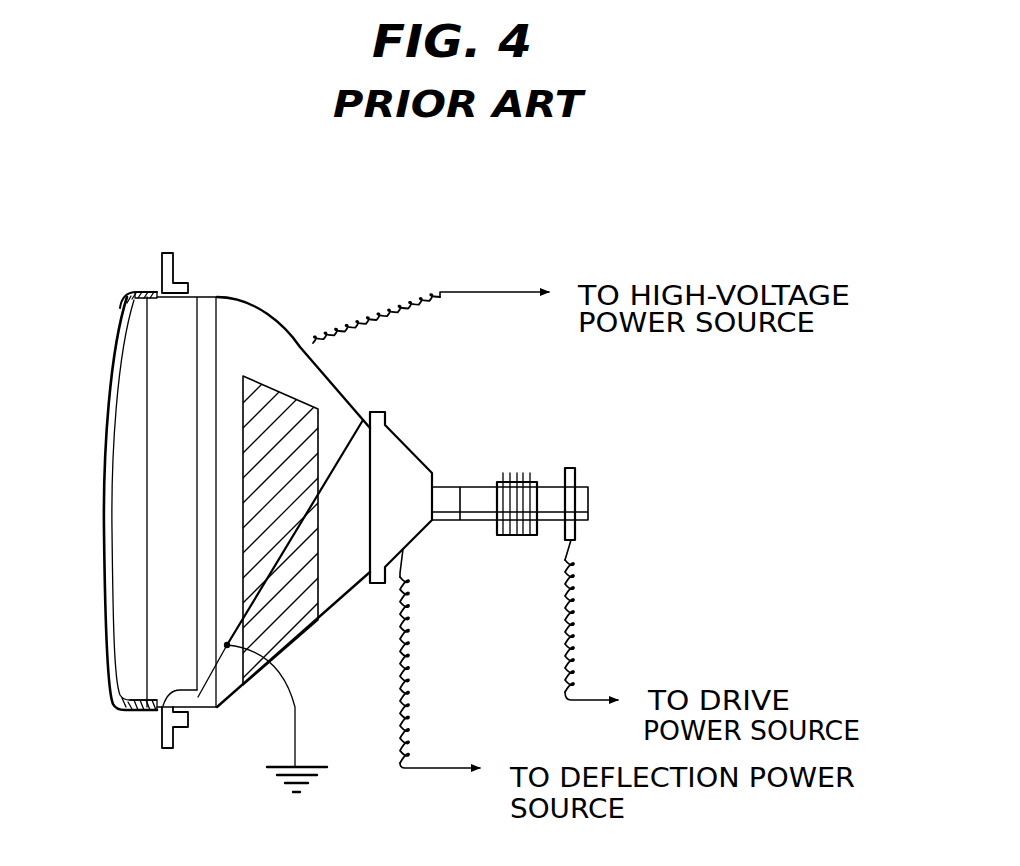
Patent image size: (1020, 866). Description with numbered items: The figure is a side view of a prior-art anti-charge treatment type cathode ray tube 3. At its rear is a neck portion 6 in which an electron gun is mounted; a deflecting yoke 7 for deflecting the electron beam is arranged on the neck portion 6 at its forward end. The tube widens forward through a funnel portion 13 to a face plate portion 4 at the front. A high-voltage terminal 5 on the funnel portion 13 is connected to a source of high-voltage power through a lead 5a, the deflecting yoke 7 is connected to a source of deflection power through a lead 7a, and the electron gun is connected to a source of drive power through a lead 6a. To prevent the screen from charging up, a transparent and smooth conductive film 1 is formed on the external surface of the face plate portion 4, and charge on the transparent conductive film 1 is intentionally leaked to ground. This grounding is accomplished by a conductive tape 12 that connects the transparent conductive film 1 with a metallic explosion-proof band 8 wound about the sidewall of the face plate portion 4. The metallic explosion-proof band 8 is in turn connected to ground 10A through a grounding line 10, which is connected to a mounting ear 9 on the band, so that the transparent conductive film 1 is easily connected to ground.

The transparent conductive film 1 is at (106, 492).
The anti-charge treatment type cathode ray tube 3 is at (207, 725).
The face plate portion 4 is at (117, 560).
The high-voltage terminal 5 is at (313, 348).
The lead 5a is at (423, 307).
The neck portion 6 is at (482, 470).
The lead 6a is at (577, 600).
The deflecting yoke 7 is at (404, 456).
The lead 7a is at (407, 637).
The metallic explosion-proof band 8 is at (187, 312).
The mounting ear 9 is at (162, 742).
The grounding line 10 is at (325, 483).
The ground 10A is at (318, 760).
The conductive tape 12 is at (127, 295).
The funnel portion 13 is at (253, 323).